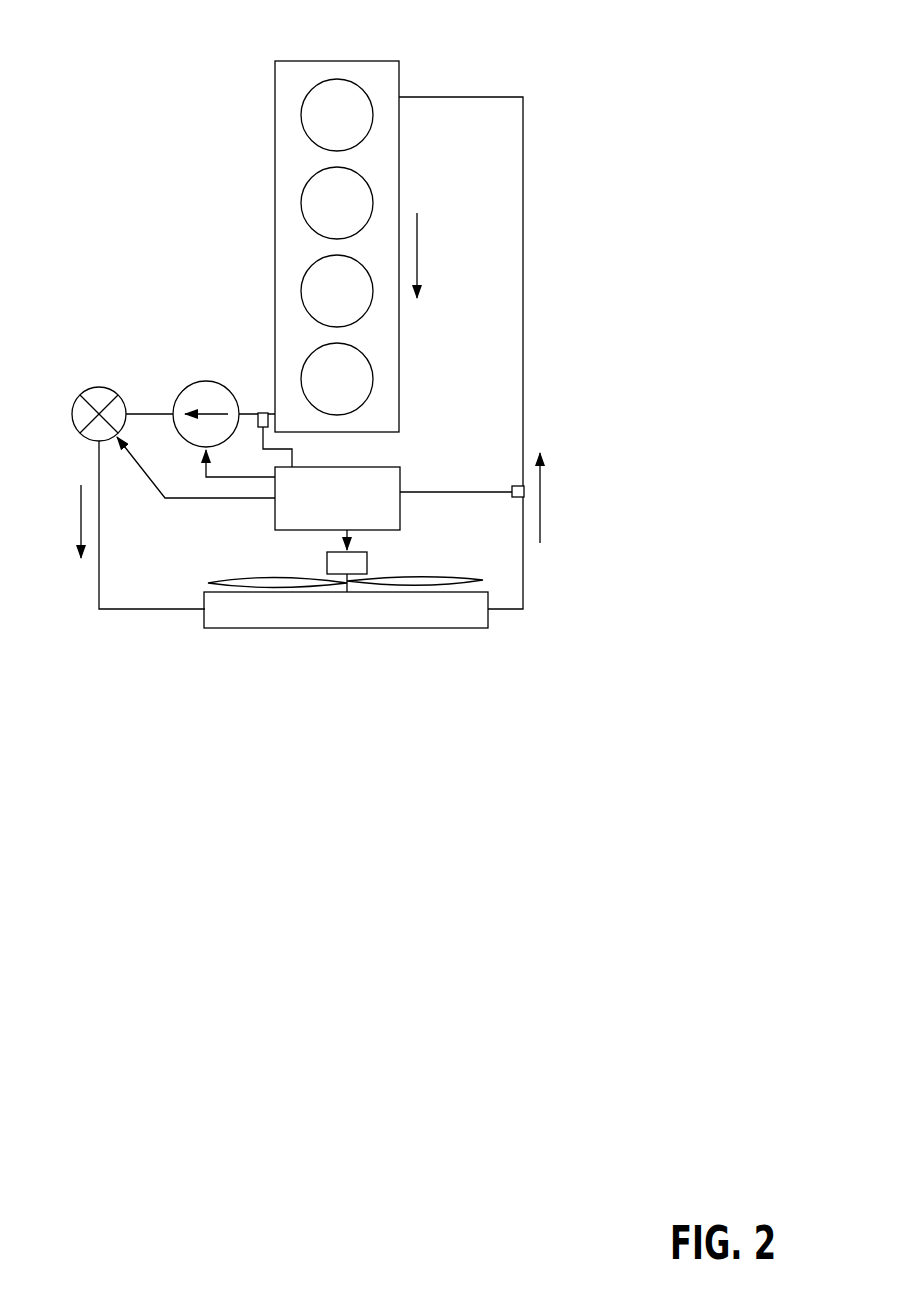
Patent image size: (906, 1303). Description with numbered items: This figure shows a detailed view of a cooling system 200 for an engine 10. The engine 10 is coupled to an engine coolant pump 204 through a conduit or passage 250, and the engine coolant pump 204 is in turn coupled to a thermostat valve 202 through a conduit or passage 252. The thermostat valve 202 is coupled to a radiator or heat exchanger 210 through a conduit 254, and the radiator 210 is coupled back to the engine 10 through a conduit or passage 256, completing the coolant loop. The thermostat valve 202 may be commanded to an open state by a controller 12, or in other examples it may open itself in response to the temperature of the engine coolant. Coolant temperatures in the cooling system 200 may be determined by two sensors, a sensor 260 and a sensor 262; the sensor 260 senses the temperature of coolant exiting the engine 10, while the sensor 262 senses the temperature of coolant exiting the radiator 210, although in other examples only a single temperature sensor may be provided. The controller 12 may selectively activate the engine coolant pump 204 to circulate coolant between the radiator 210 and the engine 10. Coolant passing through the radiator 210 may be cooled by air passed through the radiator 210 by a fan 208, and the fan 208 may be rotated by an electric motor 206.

The engine 10 is at (268, 58).
The controller 12 is at (258, 493).
The cooling system 200 is at (552, 228).
The thermostat valve 202 is at (101, 387).
The engine coolant pump 204 is at (211, 381).
The electric motor 206 is at (367, 565).
The fan 208 is at (440, 577).
The radiator 210 is at (310, 628).
The conduit 250 is at (254, 411).
The conduit 252 is at (132, 412).
The conduit 254 is at (140, 609).
The conduit 256 is at (523, 298).
The sensor 260 is at (257, 429).
The sensor 262 is at (512, 487).